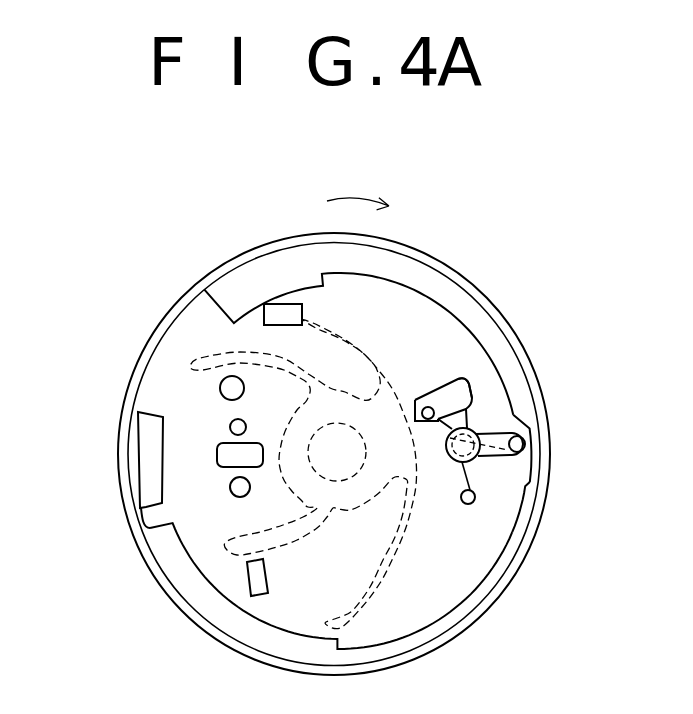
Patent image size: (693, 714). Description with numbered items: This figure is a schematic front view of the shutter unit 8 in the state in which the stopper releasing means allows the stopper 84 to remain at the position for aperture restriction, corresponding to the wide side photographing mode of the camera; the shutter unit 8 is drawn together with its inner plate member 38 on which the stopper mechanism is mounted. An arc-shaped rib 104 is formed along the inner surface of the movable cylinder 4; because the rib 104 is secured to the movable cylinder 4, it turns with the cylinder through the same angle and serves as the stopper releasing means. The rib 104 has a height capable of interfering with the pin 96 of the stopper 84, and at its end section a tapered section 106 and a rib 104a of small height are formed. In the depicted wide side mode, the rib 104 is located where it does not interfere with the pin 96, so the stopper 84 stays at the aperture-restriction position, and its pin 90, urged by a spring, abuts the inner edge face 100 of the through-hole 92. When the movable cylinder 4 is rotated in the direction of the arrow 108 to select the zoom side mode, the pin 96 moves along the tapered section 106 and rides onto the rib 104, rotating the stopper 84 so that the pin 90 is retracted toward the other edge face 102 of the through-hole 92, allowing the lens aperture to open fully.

The shutter unit 8 is at (196, 218).
The arrow 108 is at (363, 198).
The ring plate 38 is at (391, 426).
The movable cylinder 4 is at (495, 302).
The other edge face 102 is at (477, 393).
The arc-shaped rib 104 is at (515, 382).
The tapered section 106 is at (518, 420).
The pin 96 is at (528, 447).
The rib having a small height 104a is at (537, 463).
The stopper 84 is at (492, 469).
The pin 90 is at (422, 400).
The through-hole 92 is at (453, 390).
The inner edge face 100 is at (420, 421).